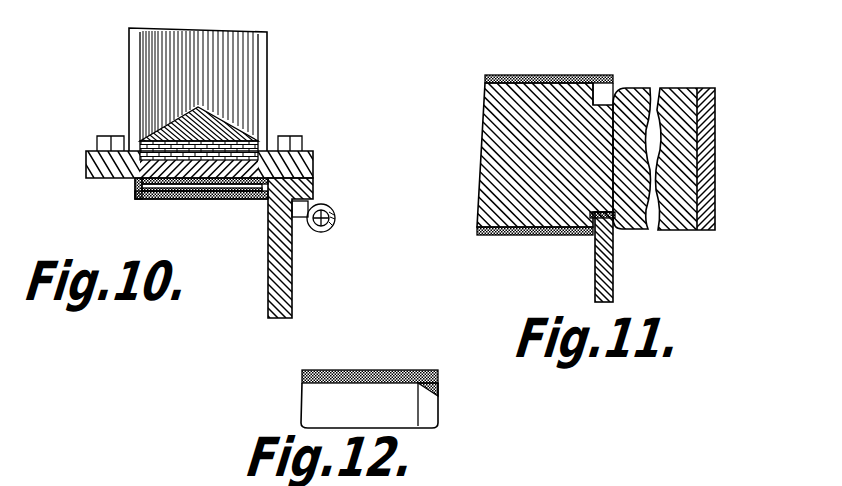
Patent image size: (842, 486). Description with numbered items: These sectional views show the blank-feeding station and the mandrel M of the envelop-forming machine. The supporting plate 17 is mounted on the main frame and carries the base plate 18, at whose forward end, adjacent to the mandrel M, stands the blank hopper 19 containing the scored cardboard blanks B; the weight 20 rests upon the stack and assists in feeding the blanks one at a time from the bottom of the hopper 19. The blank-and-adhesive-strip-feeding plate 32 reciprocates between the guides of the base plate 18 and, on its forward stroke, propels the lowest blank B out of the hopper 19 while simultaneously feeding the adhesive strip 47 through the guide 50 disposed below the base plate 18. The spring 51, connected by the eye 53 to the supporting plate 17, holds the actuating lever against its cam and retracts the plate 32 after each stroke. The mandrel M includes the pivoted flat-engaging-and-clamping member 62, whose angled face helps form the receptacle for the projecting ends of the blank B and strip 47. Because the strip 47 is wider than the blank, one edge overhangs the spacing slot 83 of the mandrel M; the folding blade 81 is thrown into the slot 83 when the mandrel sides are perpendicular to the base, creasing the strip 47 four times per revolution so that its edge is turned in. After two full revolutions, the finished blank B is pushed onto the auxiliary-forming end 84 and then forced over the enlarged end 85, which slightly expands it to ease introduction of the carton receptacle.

In FIG. 10, the supporting plate 17 is at (295, 271).
In FIG. 10, the base plate 18 is at (99, 180).
In FIG. 10, the blank hopper 19 is at (253, 60).
In FIG. 10, the weight 20 is at (208, 125).
In FIG. 10, the blank B is at (230, 147).
In FIG. 12, the blank B is at (390, 370).
In FIG. 10, the blank-and-adhesive-strip-feeding plate 32 is at (172, 181).
In FIG. 10, the adhesive strip 47 is at (248, 190).
In FIG. 11, the adhesive strip 47 is at (488, 237).
In FIG. 12, the adhesive strip 47 is at (325, 370).
In FIG. 10, the guide 50 is at (203, 200).
In FIG. 10, the spring 51 is at (335, 221).
In FIG. 10, the eye 53 is at (328, 198).
In FIG. 11, the flat-engaging-and-clamping member 62 is at (497, 104).
In FIG. 11, the folding blade 81 is at (605, 277).
In FIG. 11, the spacing slot 83 is at (601, 101).
In FIG. 11, the auxiliary-forming end 84 is at (638, 93).
In FIG. 11, the enlarged end 85 is at (707, 92).
In FIG. 11, the mandrel M is at (561, 218).